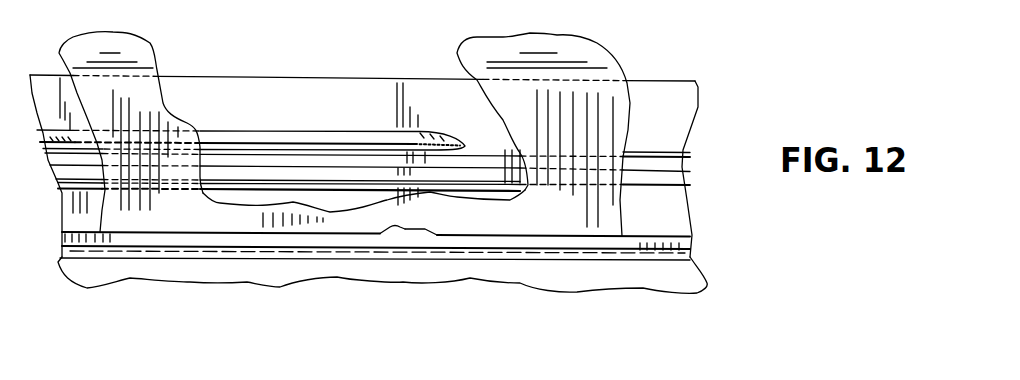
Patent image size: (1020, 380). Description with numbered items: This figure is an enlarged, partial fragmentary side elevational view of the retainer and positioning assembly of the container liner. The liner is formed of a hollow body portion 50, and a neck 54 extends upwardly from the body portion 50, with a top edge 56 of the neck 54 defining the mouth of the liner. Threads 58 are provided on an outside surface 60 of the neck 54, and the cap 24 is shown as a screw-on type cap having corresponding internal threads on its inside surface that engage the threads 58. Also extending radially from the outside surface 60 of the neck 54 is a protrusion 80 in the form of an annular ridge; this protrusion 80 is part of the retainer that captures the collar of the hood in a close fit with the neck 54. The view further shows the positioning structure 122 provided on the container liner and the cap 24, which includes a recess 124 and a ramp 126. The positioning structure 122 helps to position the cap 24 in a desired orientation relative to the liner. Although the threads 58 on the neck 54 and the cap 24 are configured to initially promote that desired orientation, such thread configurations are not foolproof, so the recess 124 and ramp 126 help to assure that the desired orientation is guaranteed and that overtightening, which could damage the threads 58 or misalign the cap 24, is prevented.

The cap 24 is at (650, 36).
The body portion 50 is at (692, 278).
The neck 54 is at (697, 202).
The top edge 56 is at (677, 83).
The threads 58 is at (337, 133).
The outside surface 60 is at (683, 115).
The protrusion 80 is at (692, 245).
The positioning structure 122 is at (447, 227).
The recess 124 is at (423, 230).
The ramp 126 is at (382, 230).